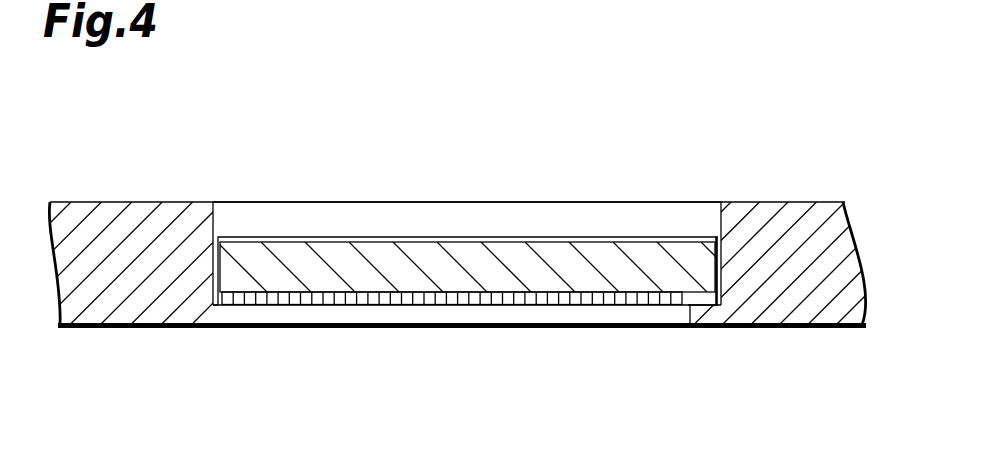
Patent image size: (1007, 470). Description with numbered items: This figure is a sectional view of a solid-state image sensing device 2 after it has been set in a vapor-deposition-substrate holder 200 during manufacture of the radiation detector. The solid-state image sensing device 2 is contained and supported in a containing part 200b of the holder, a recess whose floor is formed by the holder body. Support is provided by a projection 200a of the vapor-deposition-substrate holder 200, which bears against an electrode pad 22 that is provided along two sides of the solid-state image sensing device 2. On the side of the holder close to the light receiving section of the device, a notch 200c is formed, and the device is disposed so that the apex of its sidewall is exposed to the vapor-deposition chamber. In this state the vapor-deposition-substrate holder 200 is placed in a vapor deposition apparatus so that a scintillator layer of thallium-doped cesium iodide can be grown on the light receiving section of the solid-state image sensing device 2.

The vapor-deposition-substrate holder 200 is at (709, 148).
The projection 200a is at (690, 327).
The containing part 200b is at (378, 220).
The notch 200c is at (213, 306).
The solid-state image sensing device 2 is at (562, 237).
The electrode pad 22 is at (482, 304).